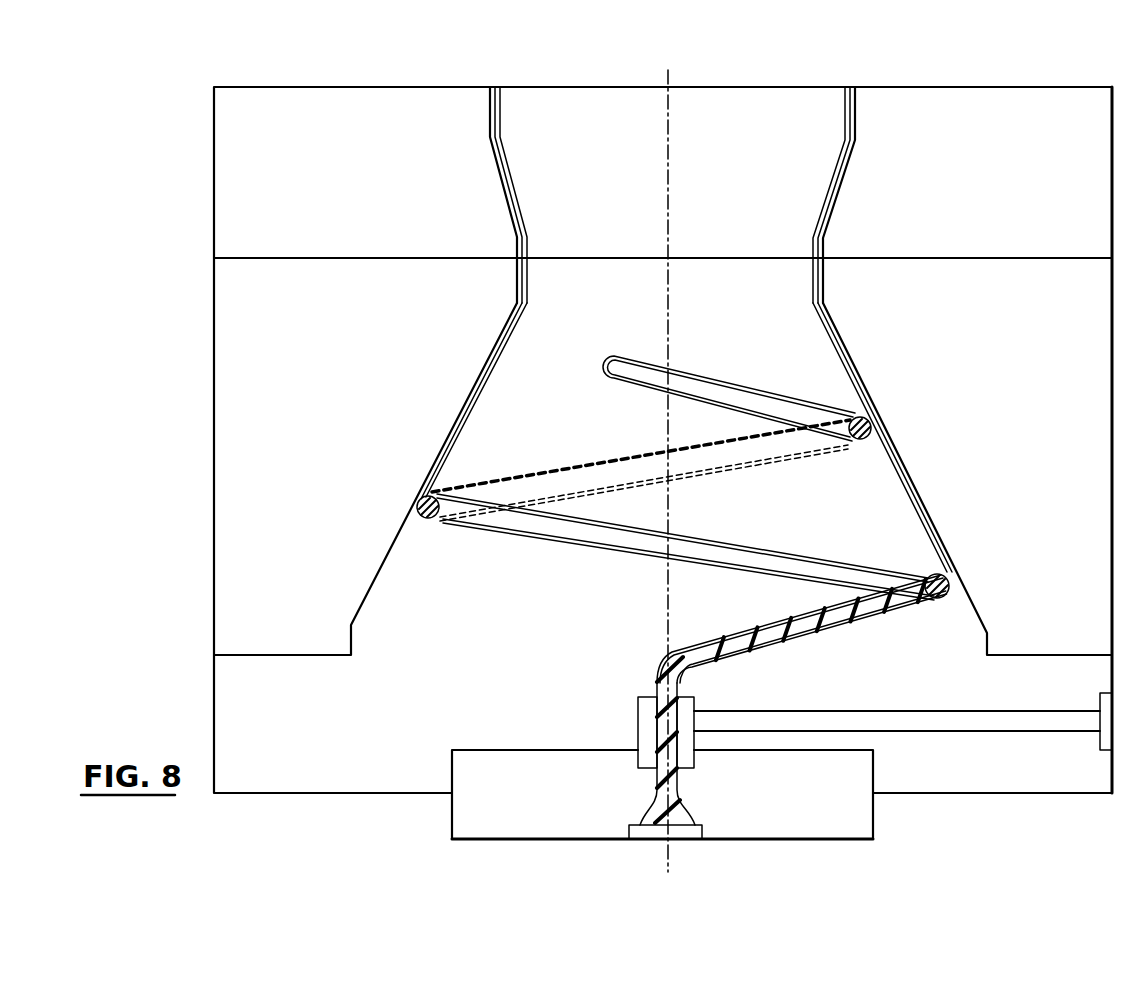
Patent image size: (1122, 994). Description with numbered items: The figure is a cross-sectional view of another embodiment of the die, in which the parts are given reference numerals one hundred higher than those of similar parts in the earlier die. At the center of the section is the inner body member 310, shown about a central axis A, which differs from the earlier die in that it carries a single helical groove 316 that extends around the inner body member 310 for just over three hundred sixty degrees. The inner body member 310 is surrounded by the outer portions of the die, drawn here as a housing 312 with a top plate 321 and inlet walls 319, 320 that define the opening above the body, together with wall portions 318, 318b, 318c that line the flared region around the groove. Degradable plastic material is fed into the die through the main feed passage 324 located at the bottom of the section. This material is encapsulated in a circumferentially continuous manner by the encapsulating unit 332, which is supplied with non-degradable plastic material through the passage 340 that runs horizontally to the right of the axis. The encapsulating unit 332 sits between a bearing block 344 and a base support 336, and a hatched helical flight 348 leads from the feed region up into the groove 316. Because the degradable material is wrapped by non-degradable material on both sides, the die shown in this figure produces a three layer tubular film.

The inner body member 310 is at (603, 285).
The housing 312 is at (355, 295).
The helical groove 316 is at (618, 568).
The hopper wall bead 318 is at (862, 376).
The hopper wall inner lining 318b is at (517, 283).
The hopper wall lower bead 318c is at (447, 432).
The inlet throat wall 319 is at (604, 86).
The inlet throat wall 320 is at (846, 87).
The housing top plate 321 is at (374, 116).
The main feed passage 324 is at (652, 805).
The encapsulating unit 332 is at (691, 697).
The base support 336 is at (678, 765).
The passage 340 is at (940, 718).
The bearing block 344 is at (651, 697).
The helical flight 348 is at (818, 640).
The axis A is at (669, 128).